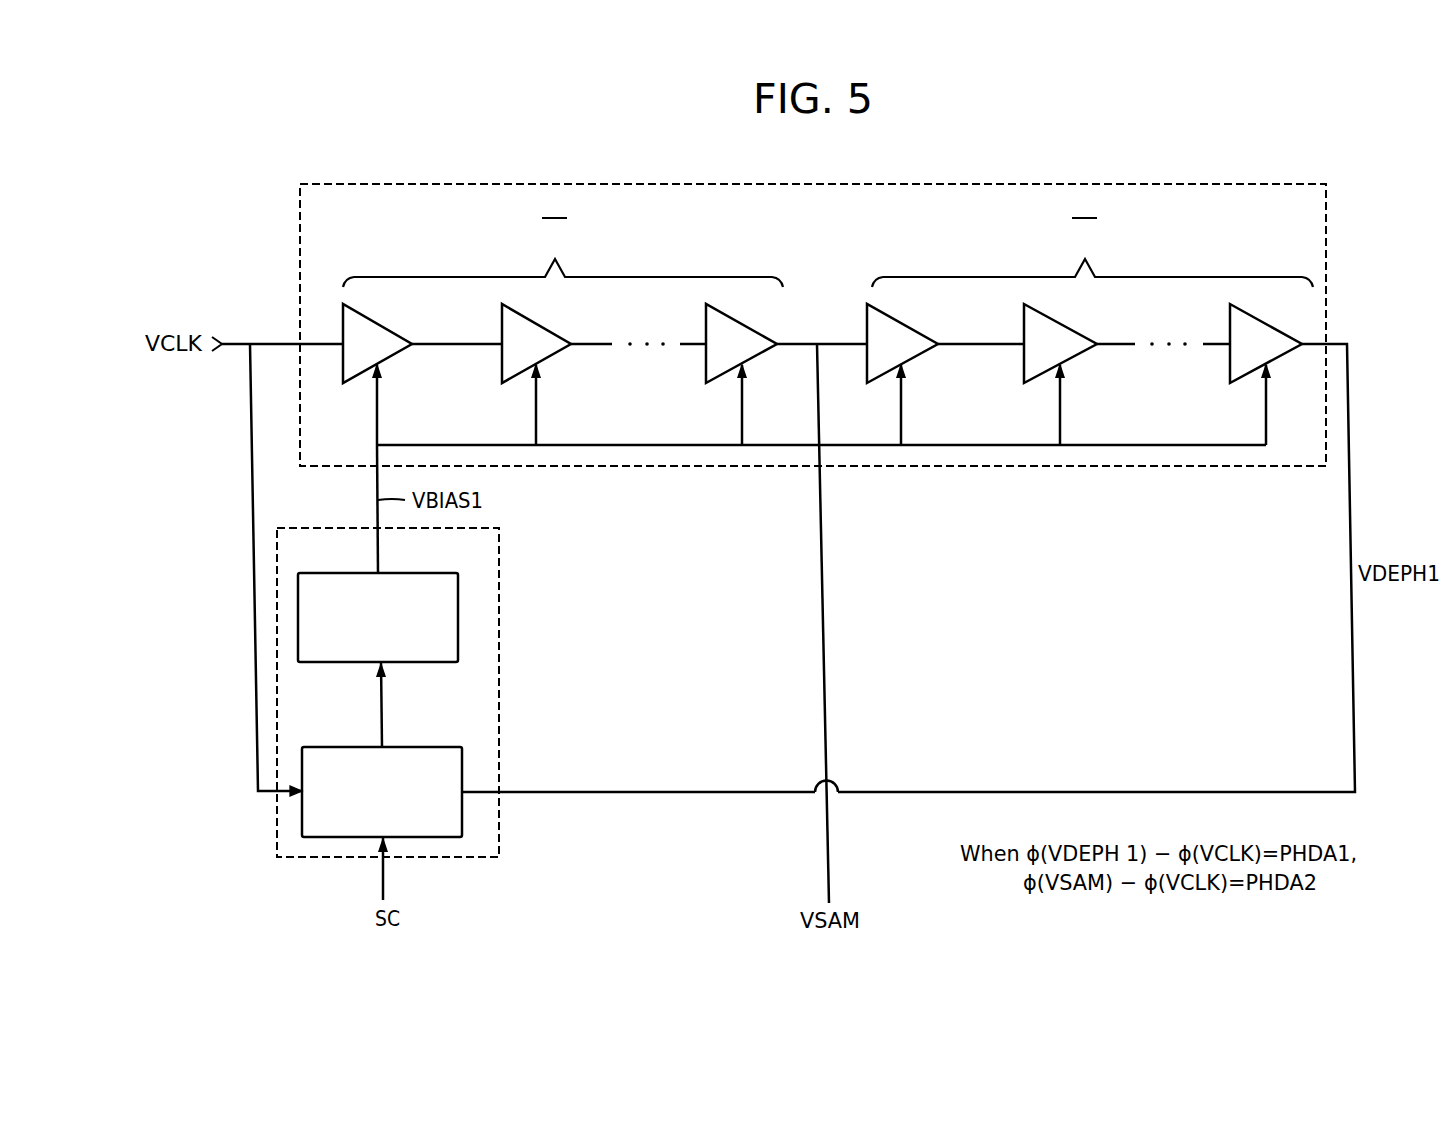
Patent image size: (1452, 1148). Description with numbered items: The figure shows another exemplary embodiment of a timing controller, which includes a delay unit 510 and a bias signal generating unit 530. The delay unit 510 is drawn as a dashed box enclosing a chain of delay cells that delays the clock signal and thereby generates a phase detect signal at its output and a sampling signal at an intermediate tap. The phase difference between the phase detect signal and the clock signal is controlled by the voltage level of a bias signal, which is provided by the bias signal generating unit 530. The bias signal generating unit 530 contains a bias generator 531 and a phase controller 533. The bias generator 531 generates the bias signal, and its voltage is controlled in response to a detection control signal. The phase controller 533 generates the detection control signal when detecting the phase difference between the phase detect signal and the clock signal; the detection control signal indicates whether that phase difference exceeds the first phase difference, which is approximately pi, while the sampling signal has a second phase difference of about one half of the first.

The delay unit 510 is at (1326, 230).
The bias signal generating unit 530 is at (423, 692).
The bias generator 531 is at (418, 745).
The phase controller 533 is at (413, 572).